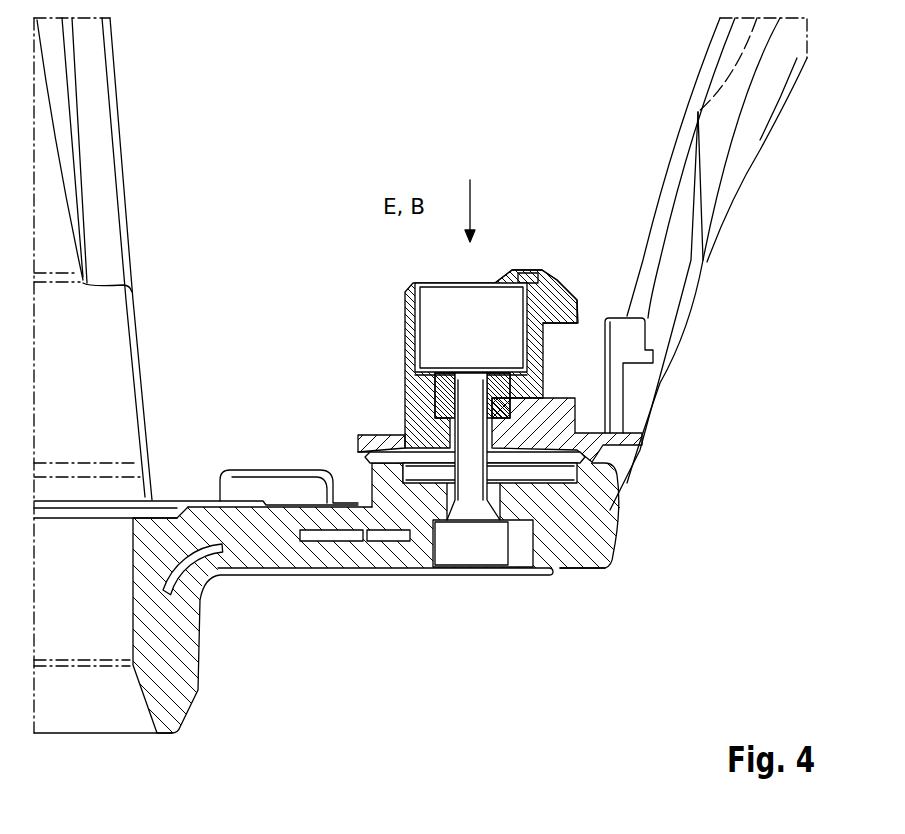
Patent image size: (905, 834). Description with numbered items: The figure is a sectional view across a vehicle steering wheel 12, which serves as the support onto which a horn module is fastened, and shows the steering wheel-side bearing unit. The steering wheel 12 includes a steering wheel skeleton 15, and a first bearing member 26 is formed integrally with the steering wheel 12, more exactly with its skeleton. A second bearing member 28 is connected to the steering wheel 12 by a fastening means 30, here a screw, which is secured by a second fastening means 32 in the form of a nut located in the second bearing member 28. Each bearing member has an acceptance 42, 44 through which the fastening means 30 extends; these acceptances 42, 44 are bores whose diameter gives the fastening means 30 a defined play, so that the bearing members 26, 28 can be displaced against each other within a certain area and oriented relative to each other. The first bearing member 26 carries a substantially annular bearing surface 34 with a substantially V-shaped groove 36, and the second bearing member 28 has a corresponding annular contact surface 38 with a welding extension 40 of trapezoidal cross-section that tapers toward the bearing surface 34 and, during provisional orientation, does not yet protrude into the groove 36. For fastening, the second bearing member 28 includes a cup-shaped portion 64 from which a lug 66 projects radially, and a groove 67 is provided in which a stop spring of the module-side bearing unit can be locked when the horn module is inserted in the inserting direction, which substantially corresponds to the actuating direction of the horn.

The vehicle steering wheel 12 is at (705, 232).
The steering wheel skeleton 15 is at (185, 688).
The first bearing member 26 is at (600, 480).
The second bearing member 28 is at (410, 348).
The fastening means 30 is at (467, 513).
The second fastening means 32 is at (505, 399).
The bearing surface 34 is at (607, 453).
The V-shaped groove 36 is at (598, 570).
The contact surface 38 is at (358, 453).
The welding extension 40 is at (391, 456).
The acceptance 42 is at (493, 510).
The acceptance 44 is at (447, 434).
The cup-shaped portion 64 is at (410, 290).
The lug 66 is at (557, 300).
The groove 67 is at (546, 360).